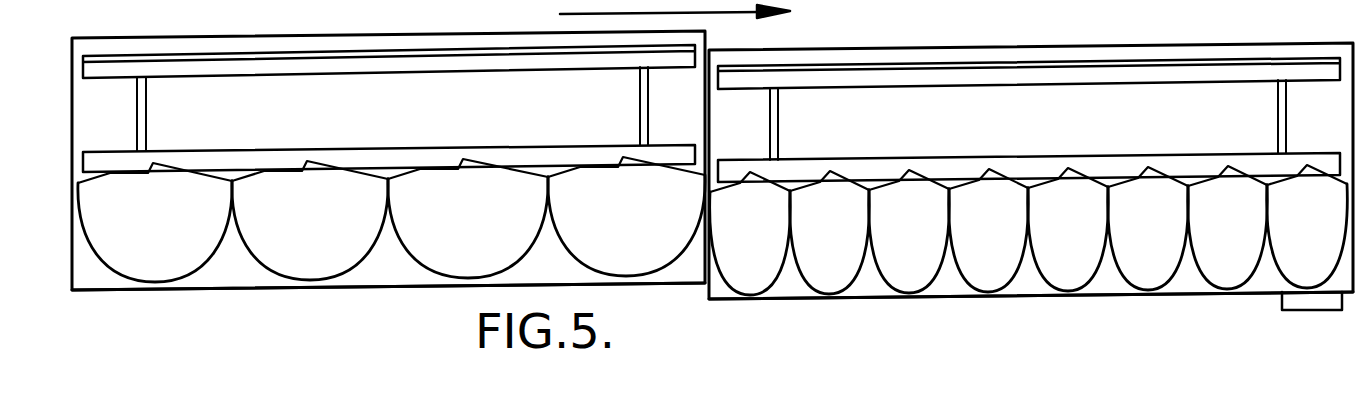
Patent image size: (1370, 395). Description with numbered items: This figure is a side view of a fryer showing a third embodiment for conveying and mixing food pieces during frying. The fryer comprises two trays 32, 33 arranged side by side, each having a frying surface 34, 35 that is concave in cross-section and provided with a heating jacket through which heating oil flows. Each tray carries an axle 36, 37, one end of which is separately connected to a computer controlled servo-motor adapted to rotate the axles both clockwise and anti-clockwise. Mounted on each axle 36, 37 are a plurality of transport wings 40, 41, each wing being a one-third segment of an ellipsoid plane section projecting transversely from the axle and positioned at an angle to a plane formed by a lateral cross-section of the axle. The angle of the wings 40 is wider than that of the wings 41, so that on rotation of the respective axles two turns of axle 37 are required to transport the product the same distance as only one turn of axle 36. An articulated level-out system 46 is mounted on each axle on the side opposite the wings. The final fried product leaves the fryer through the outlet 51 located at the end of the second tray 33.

The first tray 32 is at (312, 300).
The second tray 33 is at (1074, 306).
The bottom wall of first tray 34 is at (358, 283).
The bottom wall of second tray 35 is at (1202, 283).
The lower shelf of first tray 36 is at (600, 152).
The lower shelf of second tray 37 is at (795, 172).
The large pockets 40 is at (150, 247).
The small pockets 41 is at (828, 257).
The upper rail 46 is at (352, 65).
The tab 51 is at (1307, 303).